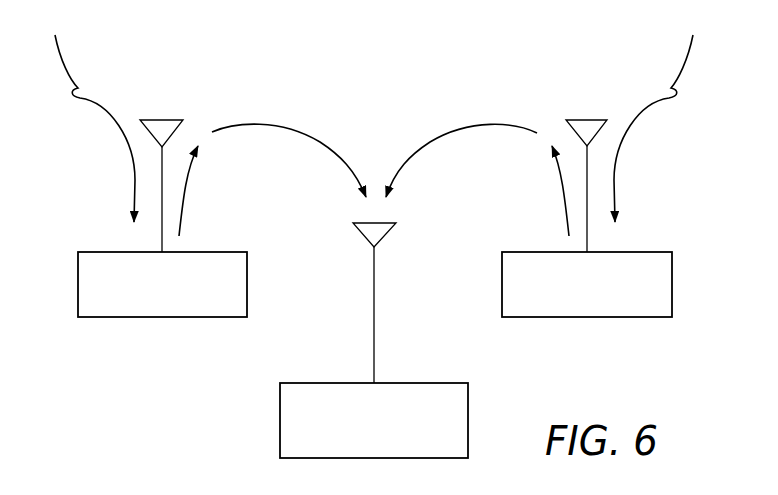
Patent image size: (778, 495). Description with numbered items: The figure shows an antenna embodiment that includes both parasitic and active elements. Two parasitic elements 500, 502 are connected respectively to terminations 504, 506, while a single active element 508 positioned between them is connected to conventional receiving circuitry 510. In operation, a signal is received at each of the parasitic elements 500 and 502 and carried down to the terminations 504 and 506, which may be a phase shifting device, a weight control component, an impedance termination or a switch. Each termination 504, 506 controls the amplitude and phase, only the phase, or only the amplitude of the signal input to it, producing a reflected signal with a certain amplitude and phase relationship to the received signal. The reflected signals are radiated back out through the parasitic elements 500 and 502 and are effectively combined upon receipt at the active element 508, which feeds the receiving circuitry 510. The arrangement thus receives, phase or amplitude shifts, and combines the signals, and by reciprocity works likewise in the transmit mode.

The parasitic element 500 is at (162, 120).
The parasitic element 502 is at (590, 120).
The termination 504 is at (147, 317).
The termination 506 is at (603, 317).
The active element 508 is at (388, 233).
The receiving circuitry 510 is at (280, 428).